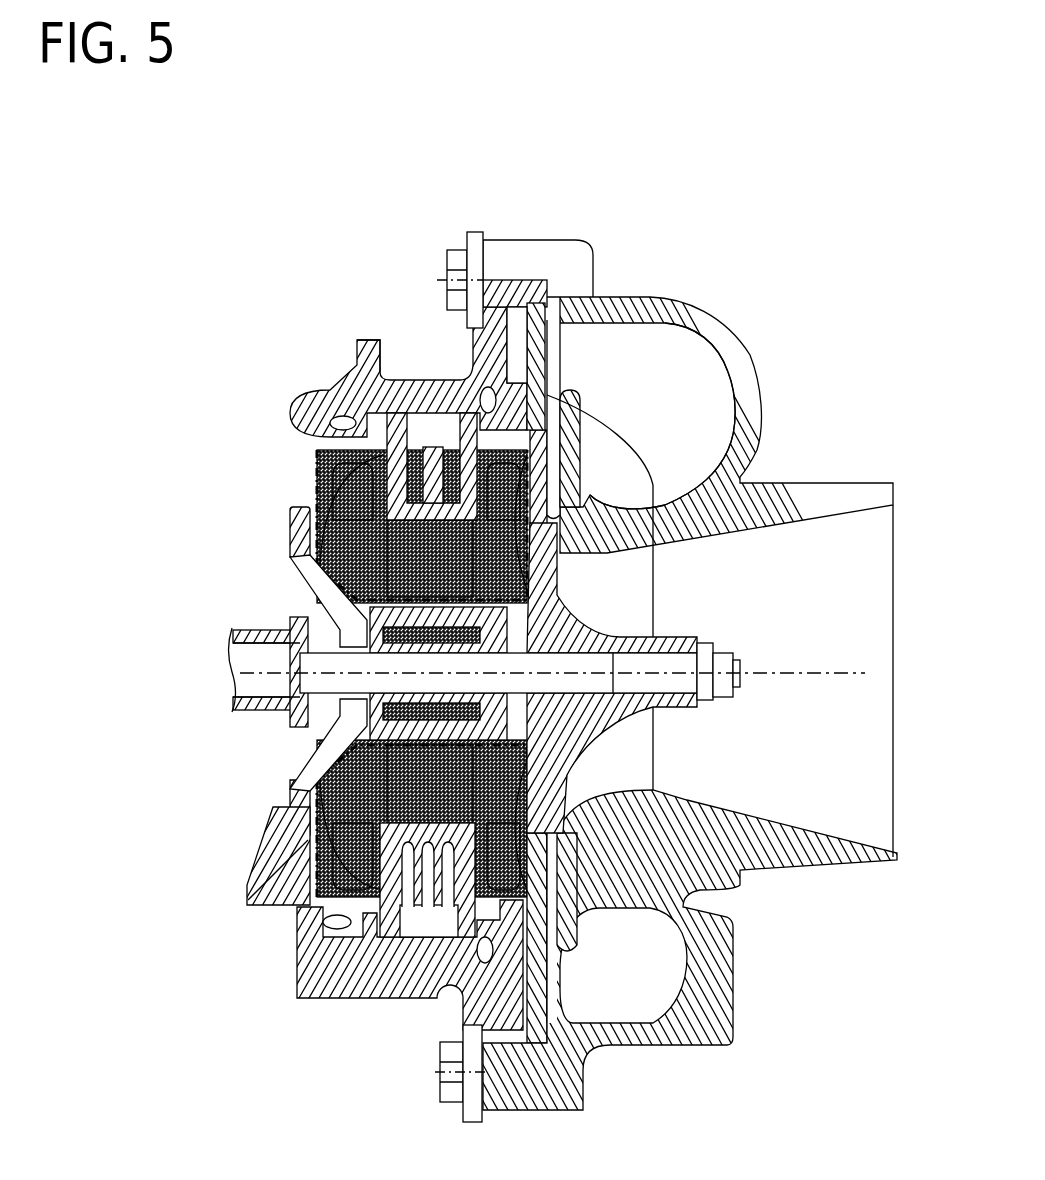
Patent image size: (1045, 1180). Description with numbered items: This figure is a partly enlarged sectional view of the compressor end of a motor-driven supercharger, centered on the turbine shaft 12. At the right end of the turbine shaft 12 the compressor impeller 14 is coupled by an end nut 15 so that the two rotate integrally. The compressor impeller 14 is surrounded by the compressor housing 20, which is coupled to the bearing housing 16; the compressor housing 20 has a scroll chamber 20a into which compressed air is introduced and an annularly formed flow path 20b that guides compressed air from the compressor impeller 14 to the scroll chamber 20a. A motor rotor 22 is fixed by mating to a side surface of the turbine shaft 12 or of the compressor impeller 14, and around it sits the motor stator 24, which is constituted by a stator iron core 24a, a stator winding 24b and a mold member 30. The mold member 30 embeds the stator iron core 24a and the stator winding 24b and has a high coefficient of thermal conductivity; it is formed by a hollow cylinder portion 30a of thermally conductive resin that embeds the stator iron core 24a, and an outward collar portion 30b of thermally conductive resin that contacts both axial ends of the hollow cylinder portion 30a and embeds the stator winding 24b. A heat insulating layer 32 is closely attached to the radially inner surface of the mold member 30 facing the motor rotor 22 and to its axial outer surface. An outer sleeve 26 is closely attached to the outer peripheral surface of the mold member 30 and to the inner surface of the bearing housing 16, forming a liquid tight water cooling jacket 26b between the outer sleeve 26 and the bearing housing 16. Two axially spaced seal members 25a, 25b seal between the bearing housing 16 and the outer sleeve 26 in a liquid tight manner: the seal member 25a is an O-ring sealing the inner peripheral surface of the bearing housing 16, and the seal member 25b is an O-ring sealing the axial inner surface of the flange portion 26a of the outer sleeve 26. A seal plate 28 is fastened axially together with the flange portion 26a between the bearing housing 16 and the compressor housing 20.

The turbine shaft 12 is at (262, 690).
The compressor impeller 14 is at (590, 708).
The end nut 15 is at (725, 650).
The bearing housing 16 is at (348, 333).
The compressor housing 20 is at (740, 330).
The scroll chamber 20a is at (683, 393).
The flow path 20b is at (553, 455).
The motor rotor 22 is at (375, 725).
The motor stator 24 is at (327, 490).
The stator iron core 24a is at (405, 560).
The stator winding 24b is at (353, 532).
The seal member 25a is at (357, 340).
The seal member 25b is at (496, 400).
The outer sleeve 26 is at (430, 440).
The flange portion 26a is at (514, 385).
The water cooling jacket 26b is at (433, 923).
The seal plate 28 is at (550, 360).
The mold member 30 is at (317, 880).
The hollow cylinder portion 30a is at (362, 923).
The outward collar portion 30b is at (300, 925).
The heat insulating layer 32 is at (300, 810).